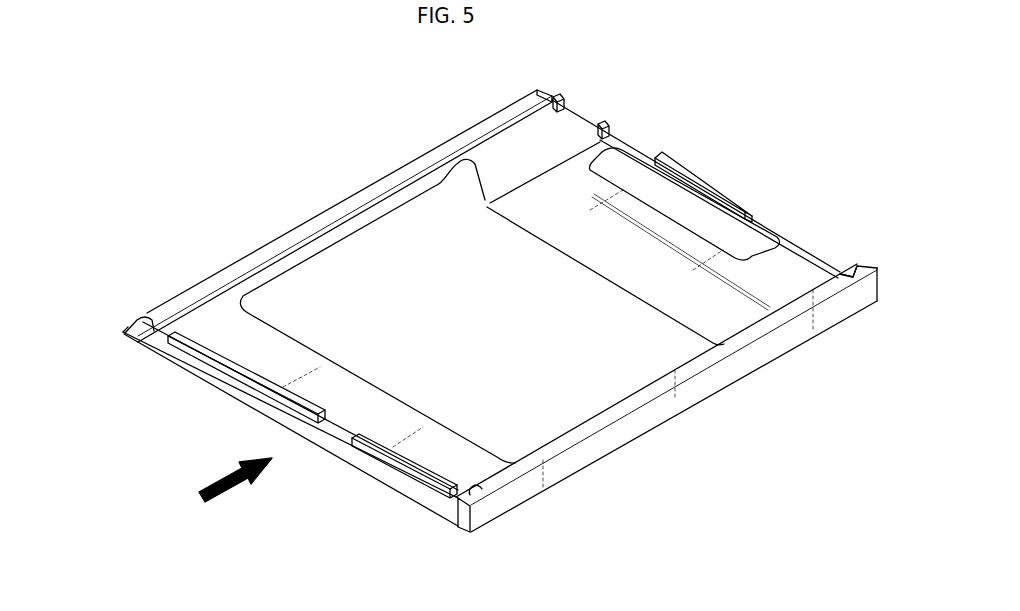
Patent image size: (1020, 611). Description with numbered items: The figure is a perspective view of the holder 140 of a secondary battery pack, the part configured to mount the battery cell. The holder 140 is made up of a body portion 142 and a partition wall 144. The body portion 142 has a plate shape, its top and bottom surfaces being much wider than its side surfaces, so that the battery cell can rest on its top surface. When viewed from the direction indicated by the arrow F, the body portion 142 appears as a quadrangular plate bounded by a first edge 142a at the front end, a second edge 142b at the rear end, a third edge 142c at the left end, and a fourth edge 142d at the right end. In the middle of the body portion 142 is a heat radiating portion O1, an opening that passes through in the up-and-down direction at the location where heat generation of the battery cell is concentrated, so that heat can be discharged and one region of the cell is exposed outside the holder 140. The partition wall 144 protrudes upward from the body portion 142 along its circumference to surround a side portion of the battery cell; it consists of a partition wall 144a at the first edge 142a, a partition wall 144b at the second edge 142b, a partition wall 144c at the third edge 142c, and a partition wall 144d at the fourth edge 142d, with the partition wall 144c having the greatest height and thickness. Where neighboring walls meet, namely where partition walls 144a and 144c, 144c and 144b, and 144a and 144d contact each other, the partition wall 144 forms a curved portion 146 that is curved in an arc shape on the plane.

The holder 140 is at (327, 115).
The body portion 142 is at (238, 352).
The first edge 142a is at (330, 457).
The second edge 142b is at (803, 247).
The third edge 142c is at (762, 355).
The fourth edge 142d is at (127, 331).
The partition wall 144 is at (80, 142).
The partition wall provided at the first edge 144a is at (403, 468).
The partition wall provided at the second edge 144b is at (712, 164).
The partition wall provided at the third edge 144c is at (631, 407).
The partition wall provided at the fourth edge 144d is at (308, 222).
The curved portion 146 is at (853, 268).
The heat radiating portion O1 is at (497, 335).
The arrow F is at (225, 490).